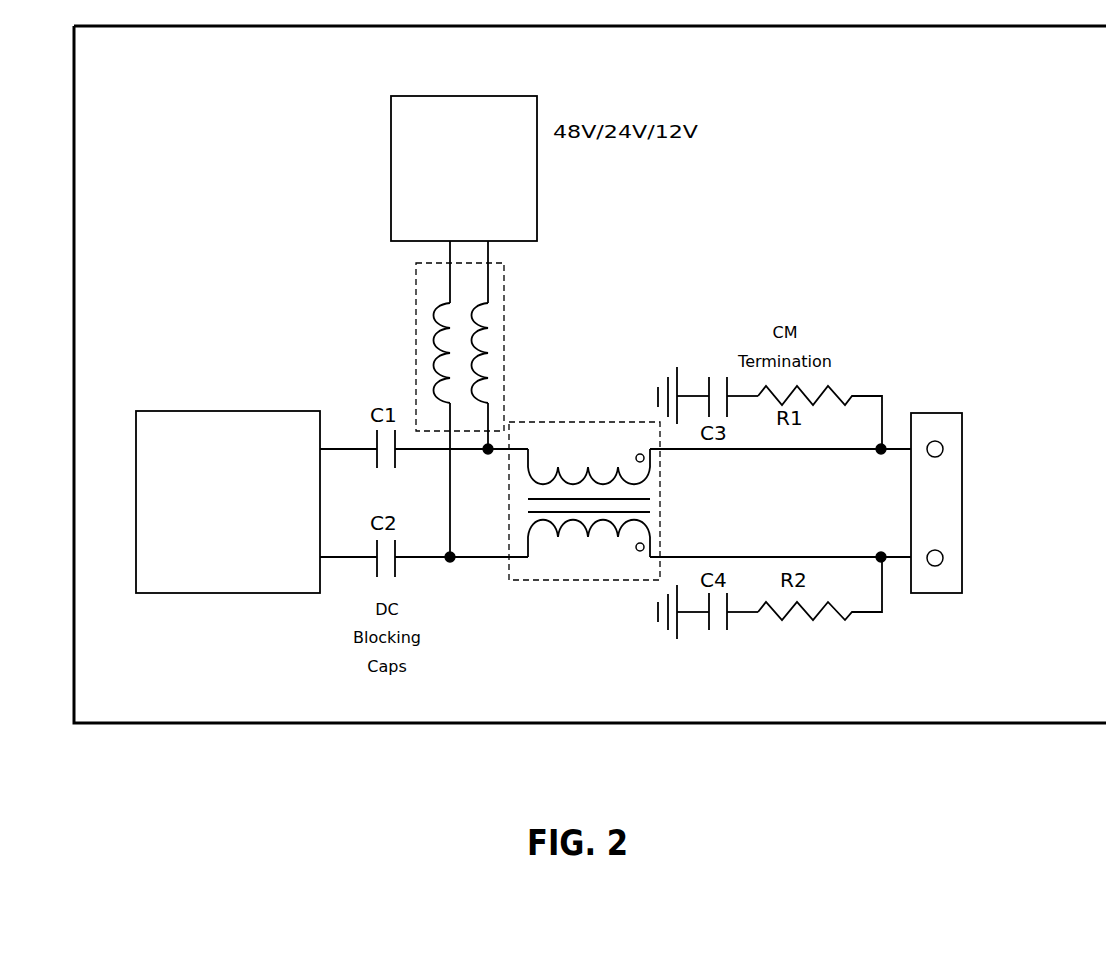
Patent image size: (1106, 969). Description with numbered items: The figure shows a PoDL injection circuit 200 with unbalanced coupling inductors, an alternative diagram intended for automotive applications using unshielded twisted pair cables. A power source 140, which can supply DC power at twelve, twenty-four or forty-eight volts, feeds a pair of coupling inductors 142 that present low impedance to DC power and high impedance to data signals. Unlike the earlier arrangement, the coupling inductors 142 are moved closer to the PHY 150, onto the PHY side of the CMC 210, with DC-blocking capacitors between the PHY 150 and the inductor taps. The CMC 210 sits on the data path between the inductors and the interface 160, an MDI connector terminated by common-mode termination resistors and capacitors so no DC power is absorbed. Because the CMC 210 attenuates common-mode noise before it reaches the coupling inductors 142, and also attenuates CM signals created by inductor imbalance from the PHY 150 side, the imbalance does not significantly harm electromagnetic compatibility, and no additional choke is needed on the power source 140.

The PoDL injection circuit 200 is at (158, 67).
The power source 140 is at (393, 96).
The coupling inductors 142 is at (504, 304).
The PHY 150 is at (188, 411).
The interface 160 is at (954, 408).
The CMC 210 is at (618, 421).